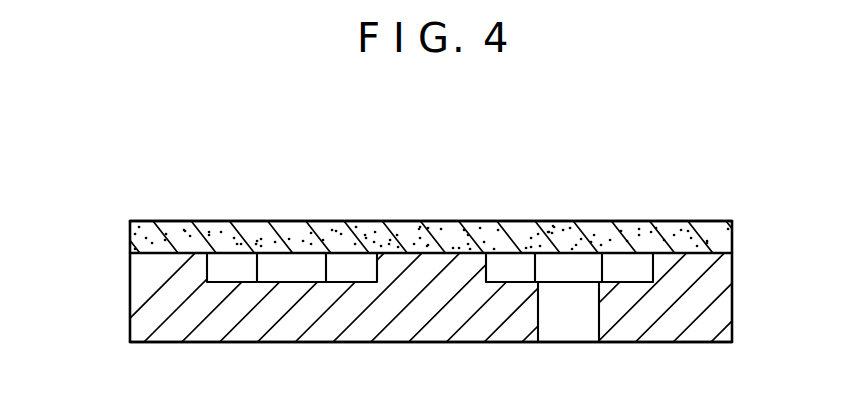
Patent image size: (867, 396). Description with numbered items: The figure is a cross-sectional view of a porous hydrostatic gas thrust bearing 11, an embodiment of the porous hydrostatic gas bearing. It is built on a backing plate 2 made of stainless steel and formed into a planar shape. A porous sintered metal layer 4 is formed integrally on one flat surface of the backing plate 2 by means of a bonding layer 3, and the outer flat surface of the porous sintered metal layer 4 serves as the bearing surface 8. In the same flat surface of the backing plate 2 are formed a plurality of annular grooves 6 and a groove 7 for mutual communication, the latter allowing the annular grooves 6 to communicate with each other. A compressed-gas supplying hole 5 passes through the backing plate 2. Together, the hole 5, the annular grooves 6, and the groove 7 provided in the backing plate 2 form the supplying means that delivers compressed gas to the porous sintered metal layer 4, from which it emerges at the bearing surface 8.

The porous hydrostatic gas thrust bearing 11 is at (103, 206).
The backing plate 2 is at (363, 322).
The bonding layer 3 is at (153, 256).
The porous sintered metal layer 4 is at (672, 222).
The compressed-gas supplying hole 5 is at (569, 317).
The annular grooves 6 is at (231, 263).
The groove for mutual communication 7 is at (310, 262).
The bearing surface 8 is at (428, 231).